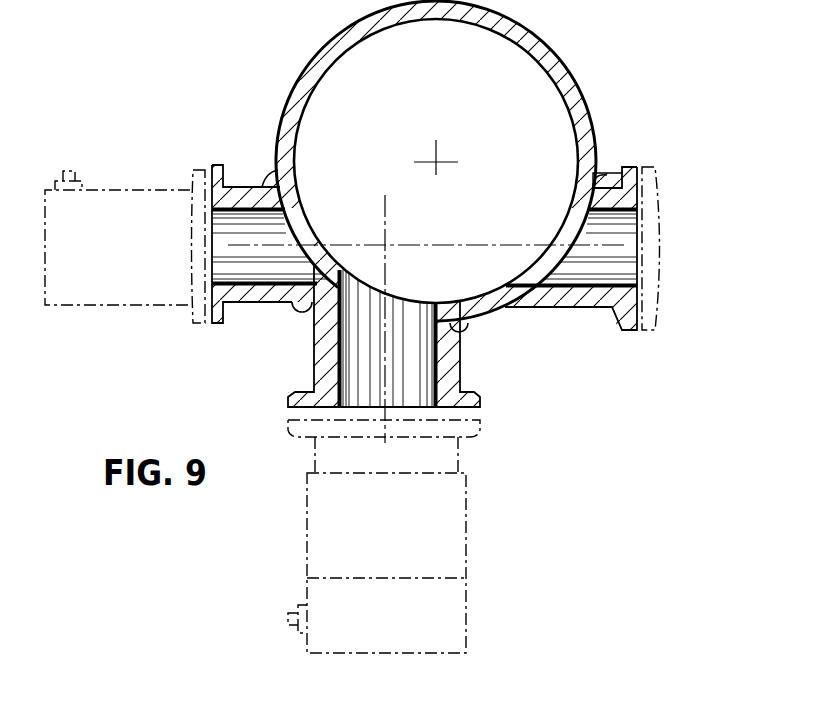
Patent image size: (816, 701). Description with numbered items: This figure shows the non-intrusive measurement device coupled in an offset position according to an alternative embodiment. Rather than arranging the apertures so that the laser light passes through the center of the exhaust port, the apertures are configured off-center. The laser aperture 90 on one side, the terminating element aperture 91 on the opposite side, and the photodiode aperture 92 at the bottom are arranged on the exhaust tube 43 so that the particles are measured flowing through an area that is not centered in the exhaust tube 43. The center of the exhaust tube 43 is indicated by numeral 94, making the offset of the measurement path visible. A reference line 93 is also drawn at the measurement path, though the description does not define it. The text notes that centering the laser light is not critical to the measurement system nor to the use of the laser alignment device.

The exhaust tube 43 is at (565, 62).
The laser aperture 90 is at (243, 186).
The terminating element aperture 91 is at (622, 166).
The photodiode aperture 92 is at (462, 358).
The port axis center line 93 is at (348, 242).
The center of exhaust tube 94 is at (433, 160).